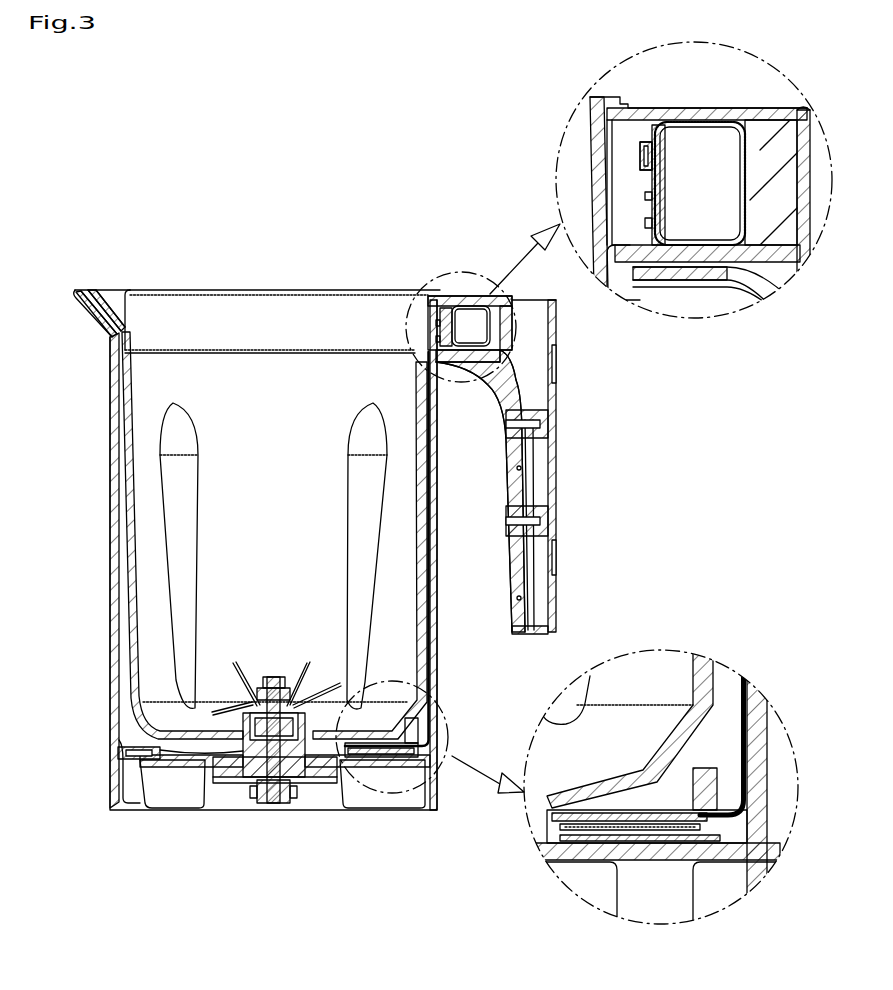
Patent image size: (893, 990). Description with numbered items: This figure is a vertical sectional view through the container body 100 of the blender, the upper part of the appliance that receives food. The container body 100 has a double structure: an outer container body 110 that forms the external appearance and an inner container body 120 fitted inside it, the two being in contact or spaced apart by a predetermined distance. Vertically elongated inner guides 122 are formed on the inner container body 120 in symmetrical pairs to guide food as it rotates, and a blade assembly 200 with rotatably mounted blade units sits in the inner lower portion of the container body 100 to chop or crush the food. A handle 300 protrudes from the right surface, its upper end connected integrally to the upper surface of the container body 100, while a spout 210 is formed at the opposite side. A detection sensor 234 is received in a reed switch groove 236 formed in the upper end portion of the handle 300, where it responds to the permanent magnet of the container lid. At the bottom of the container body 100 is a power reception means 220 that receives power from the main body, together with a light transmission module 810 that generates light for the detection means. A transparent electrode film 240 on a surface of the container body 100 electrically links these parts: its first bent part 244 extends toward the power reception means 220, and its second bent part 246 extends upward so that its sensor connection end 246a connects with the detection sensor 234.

The container body 100 is at (90, 470).
The outer container body 110 is at (118, 508).
The inner container body 120 is at (130, 542).
The inner guide 122 is at (178, 578).
The blade assembly 200 is at (232, 722).
The spout 210 is at (90, 290).
The power reception means 220 is at (425, 745).
The detection sensor 234 is at (440, 318).
The reed switch groove 236 is at (488, 296).
The transparent electrode film 240 is at (432, 648).
The first bent part 244 is at (590, 850).
The second bent part 246 is at (745, 185).
The sensor connection end 246a is at (640, 155).
The handle 300 is at (558, 460).
The light transmission module 810 is at (118, 752).